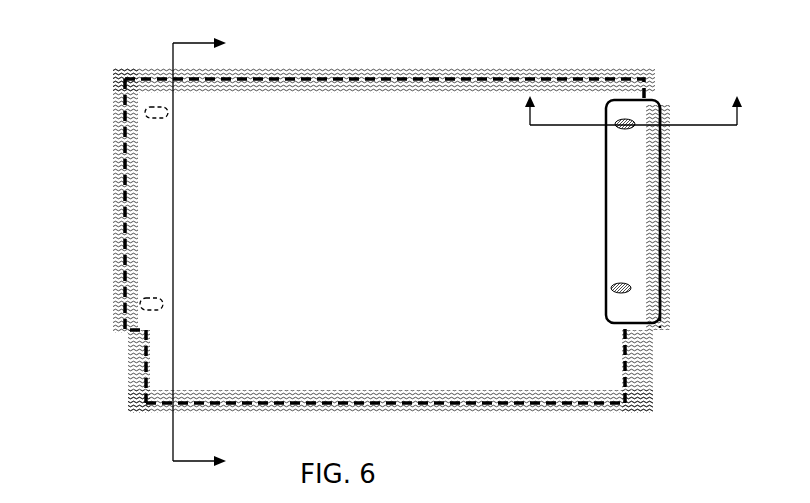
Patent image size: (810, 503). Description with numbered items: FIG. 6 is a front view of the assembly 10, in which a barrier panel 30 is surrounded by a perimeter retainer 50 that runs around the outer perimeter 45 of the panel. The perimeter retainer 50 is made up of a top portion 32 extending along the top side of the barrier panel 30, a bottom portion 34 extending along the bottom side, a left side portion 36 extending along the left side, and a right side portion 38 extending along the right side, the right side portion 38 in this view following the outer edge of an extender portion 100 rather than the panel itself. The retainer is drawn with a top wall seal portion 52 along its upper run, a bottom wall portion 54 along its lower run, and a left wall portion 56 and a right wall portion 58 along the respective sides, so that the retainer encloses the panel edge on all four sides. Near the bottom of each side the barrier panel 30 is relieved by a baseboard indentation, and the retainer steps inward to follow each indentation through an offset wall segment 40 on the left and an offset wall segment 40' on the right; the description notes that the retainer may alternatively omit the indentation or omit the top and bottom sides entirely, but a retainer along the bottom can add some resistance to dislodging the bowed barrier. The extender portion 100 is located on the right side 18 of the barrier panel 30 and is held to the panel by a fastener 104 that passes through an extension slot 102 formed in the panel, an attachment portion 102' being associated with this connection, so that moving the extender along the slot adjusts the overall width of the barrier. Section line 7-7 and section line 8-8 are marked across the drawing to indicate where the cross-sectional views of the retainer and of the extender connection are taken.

The vehicle floor structure / assembly 10 is at (151, 76).
The section line 7- 7 is at (199, 255).
The section line 8- 8 is at (631, 111).
The barrier panel 30 is at (296, 110).
The outer perimeter 45 is at (507, 84).
The top portion 32 is at (575, 98).
The top wall seal portion 52 is at (612, 94).
The perimeter retainer 50 is at (662, 108).
The right side 18 is at (665, 116).
The right wall portion 58 is at (670, 147).
The right side portion 38 is at (666, 180).
The extender portion 100 is at (630, 225).
The fastener 104 is at (627, 285).
The extension slot 102 is at (690, 216).
The offset wall segment 40' is at (597, 363).
The bottom wall portion 54 is at (588, 400).
The bottom portion 34 is at (413, 405).
The offset wall segment 40 is at (114, 355).
The left wall portion 56 is at (120, 270).
The left side portion 36 is at (122, 210).
The attachment portion 102' is at (118, 109).